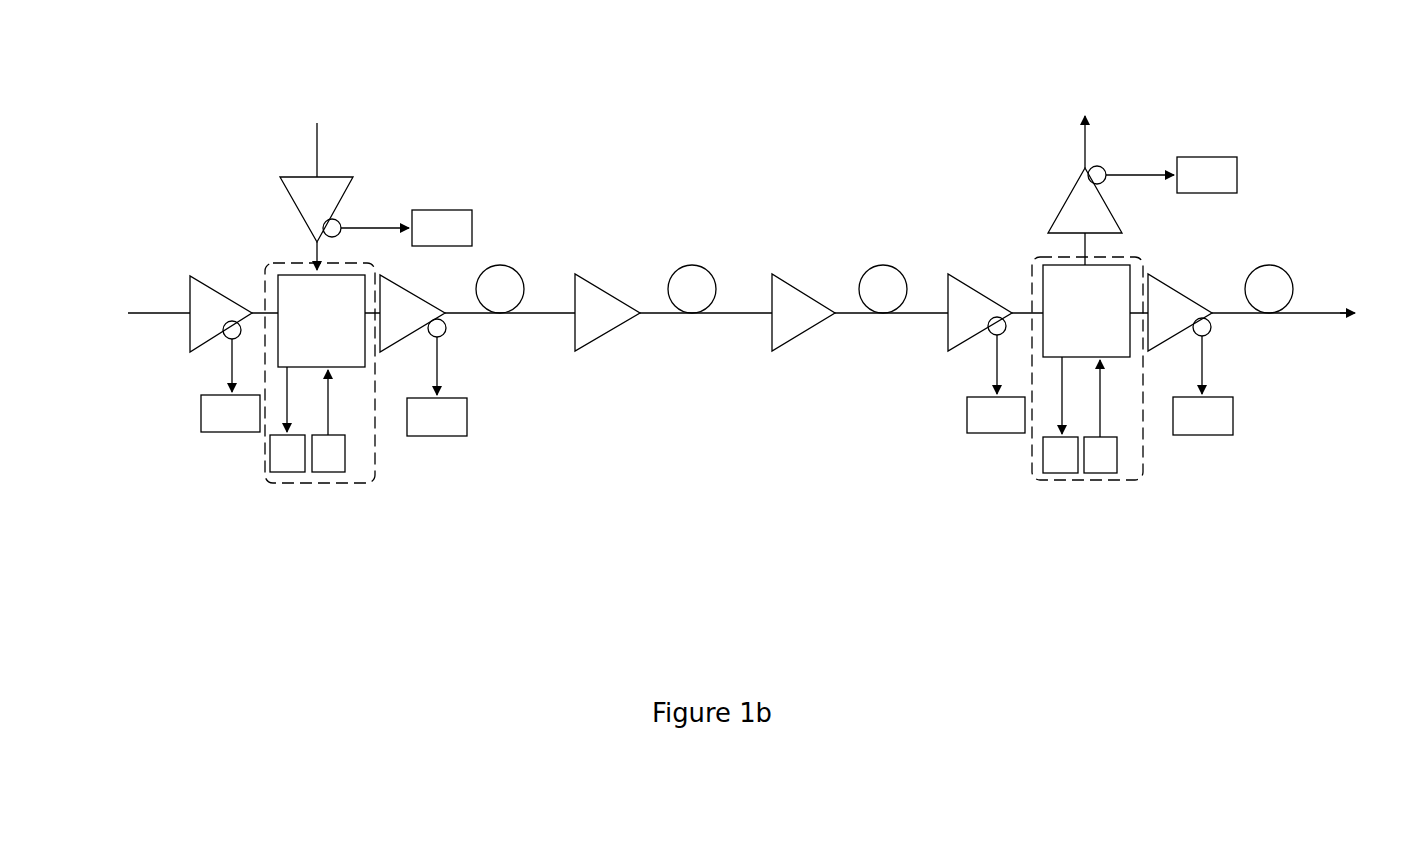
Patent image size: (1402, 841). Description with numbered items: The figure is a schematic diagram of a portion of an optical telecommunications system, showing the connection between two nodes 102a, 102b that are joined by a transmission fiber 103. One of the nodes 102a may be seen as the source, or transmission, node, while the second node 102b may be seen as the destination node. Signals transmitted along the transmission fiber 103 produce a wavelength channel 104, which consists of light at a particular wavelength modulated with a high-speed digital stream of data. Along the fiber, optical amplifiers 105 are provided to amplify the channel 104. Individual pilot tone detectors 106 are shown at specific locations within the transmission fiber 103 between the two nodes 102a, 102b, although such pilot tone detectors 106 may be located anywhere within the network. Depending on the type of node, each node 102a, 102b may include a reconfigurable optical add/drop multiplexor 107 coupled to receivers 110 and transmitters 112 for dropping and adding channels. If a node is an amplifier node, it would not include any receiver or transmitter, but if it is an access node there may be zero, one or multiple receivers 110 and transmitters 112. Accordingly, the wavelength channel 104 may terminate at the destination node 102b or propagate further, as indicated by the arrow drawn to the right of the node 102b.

The transmission node 102a is at (264, 280).
The destination node 102b is at (1144, 257).
The transmission fiber 103 is at (650, 302).
The wavelength channel 104 is at (727, 313).
The optical amplifier 105 is at (338, 177).
The pilot tone detector 106 is at (228, 430).
The reconfigurable optical add/drop multiplexor 107 is at (704, 316).
The receiver 110 is at (293, 472).
The transmitter 112 is at (333, 472).